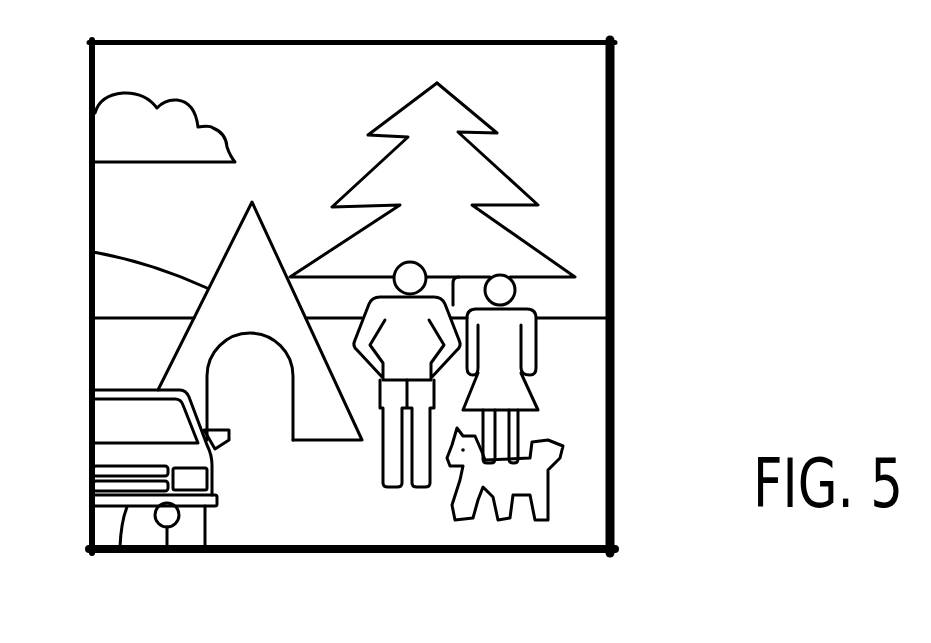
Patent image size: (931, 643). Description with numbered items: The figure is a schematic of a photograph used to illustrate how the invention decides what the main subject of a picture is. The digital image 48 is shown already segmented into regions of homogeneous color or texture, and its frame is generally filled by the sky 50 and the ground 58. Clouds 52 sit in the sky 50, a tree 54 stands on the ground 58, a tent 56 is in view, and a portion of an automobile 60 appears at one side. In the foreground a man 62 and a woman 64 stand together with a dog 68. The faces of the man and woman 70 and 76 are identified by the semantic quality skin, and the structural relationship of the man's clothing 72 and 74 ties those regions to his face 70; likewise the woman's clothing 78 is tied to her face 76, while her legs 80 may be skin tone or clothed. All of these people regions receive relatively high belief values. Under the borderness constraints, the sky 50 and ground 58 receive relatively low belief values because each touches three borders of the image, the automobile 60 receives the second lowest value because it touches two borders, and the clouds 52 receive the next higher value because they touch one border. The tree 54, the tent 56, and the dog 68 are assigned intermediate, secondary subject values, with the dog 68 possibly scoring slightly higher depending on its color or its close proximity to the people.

The digital image 48 is at (618, 487).
The sky 50 is at (588, 110).
The clouds 52 is at (112, 129).
The tree 54 is at (535, 248).
The tent 56 is at (93, 252).
The ground 58 is at (102, 354).
The automobile 60 is at (120, 548).
The man 62 is at (372, 483).
The woman 64 is at (690, 273).
The dog 68 is at (510, 521).
The face of the man 70 is at (395, 266).
The man's clothing 72 is at (400, 358).
The man's clothing 74 is at (416, 489).
The face of the woman 76 is at (518, 291).
The woman's clothing 78 is at (537, 342).
The woman's legs 80 is at (517, 422).